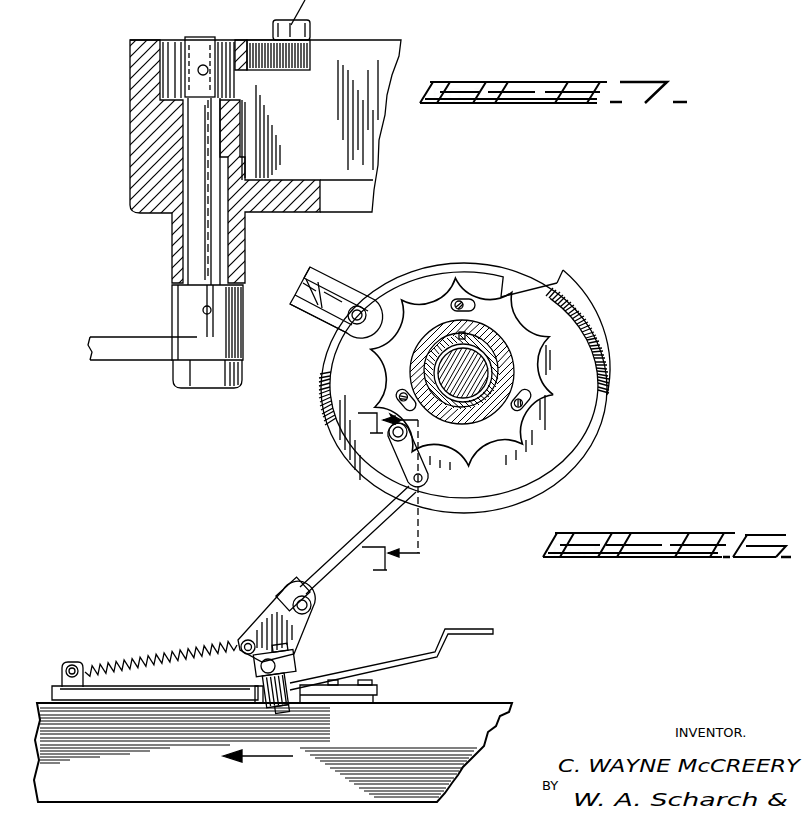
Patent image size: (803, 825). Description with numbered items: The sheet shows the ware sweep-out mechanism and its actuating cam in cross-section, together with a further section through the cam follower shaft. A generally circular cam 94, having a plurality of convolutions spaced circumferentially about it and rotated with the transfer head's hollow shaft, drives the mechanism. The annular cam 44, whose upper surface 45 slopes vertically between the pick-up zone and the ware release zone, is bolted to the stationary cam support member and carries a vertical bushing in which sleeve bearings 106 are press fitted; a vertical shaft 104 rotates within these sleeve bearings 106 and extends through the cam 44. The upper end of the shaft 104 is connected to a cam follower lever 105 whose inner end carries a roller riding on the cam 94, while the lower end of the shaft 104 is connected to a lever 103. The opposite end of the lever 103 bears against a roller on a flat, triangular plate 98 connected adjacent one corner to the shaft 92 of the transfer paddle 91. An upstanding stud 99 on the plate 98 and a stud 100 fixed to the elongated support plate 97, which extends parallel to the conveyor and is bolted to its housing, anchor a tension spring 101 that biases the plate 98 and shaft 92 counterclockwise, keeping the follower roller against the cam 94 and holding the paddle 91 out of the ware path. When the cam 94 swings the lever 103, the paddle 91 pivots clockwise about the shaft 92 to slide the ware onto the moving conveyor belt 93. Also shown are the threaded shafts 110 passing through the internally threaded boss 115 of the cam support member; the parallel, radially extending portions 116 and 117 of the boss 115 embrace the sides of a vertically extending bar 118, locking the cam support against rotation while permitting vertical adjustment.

In FIG. 7, the annular cam 44 is at (135, 72).
In FIG. 6, the annular cam 44 is at (581, 457).
In FIG. 6, the upper surface 45 is at (543, 488).
In FIG. 6, the cam 94 is at (503, 295).
In FIG. 7, the lever 103 is at (126, 312).
In FIG. 6, the lever 103 is at (362, 531).
In FIG. 7, the vertical shaft 104 is at (200, 175).
In FIG. 6, the vertical shaft 104 is at (426, 478).
In FIG. 7, the cam follower lever 105 is at (258, 48).
In FIG. 6, the cam follower lever 105 is at (403, 453).
In FIG. 7, the sleeve bearings 106 is at (185, 127).
In FIG. 6, the sleeve bearings 106 is at (390, 439).
In FIG. 6, the threaded shafts 110 is at (361, 309).
In FIG. 6, the boss 115 is at (323, 302).
In FIG. 6, the radially extending portion 116 is at (358, 252).
In FIG. 6, the radially extending portion 117 is at (311, 307).
In FIG. 6, the vertically extending bar 118 is at (309, 281).
In FIG. 6, the triangular plate 98 is at (273, 623).
In FIG. 6, the stud 99 is at (243, 641).
In FIG. 6, the support plate 97 is at (172, 690).
In FIG. 6, the tension spring 101 is at (134, 633).
In FIG. 6, the stud 100 is at (80, 629).
In FIG. 6, the shaft 92 is at (274, 664).
In FIG. 6, the transfer paddle 91 is at (404, 639).
In FIG. 6, the conveyor belt 93 is at (470, 717).